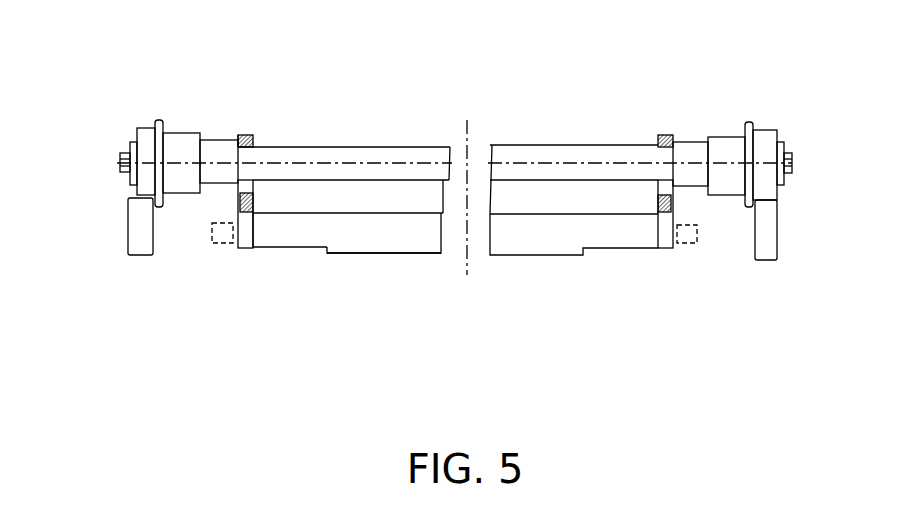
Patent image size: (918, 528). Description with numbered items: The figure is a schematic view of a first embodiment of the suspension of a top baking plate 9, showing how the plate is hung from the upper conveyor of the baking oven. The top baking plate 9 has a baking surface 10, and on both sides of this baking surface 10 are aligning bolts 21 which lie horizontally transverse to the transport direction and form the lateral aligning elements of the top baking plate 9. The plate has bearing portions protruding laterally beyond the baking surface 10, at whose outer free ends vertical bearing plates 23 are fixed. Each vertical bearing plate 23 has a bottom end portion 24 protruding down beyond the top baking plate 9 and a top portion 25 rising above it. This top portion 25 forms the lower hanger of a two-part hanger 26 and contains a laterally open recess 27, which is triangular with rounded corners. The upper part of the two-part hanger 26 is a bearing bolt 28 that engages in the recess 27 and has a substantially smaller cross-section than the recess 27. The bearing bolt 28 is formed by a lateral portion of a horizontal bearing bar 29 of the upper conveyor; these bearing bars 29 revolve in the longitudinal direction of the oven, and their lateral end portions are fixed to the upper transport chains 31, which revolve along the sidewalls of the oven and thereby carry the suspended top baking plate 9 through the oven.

The top baking plate 9 is at (316, 228).
The baking surface 10 is at (368, 253).
The aligning bolt 21 is at (217, 238).
The vertical bearing plate 23 is at (226, 203).
The bottom end portion 24 is at (248, 238).
The top portion 25 is at (253, 137).
The two-part hanger 26 is at (236, 126).
The laterally open recess 27 is at (255, 187).
The bearing bolt 28 is at (240, 152).
The horizontal bearing bar 29 is at (337, 160).
The upper transport chain 31 is at (141, 133).